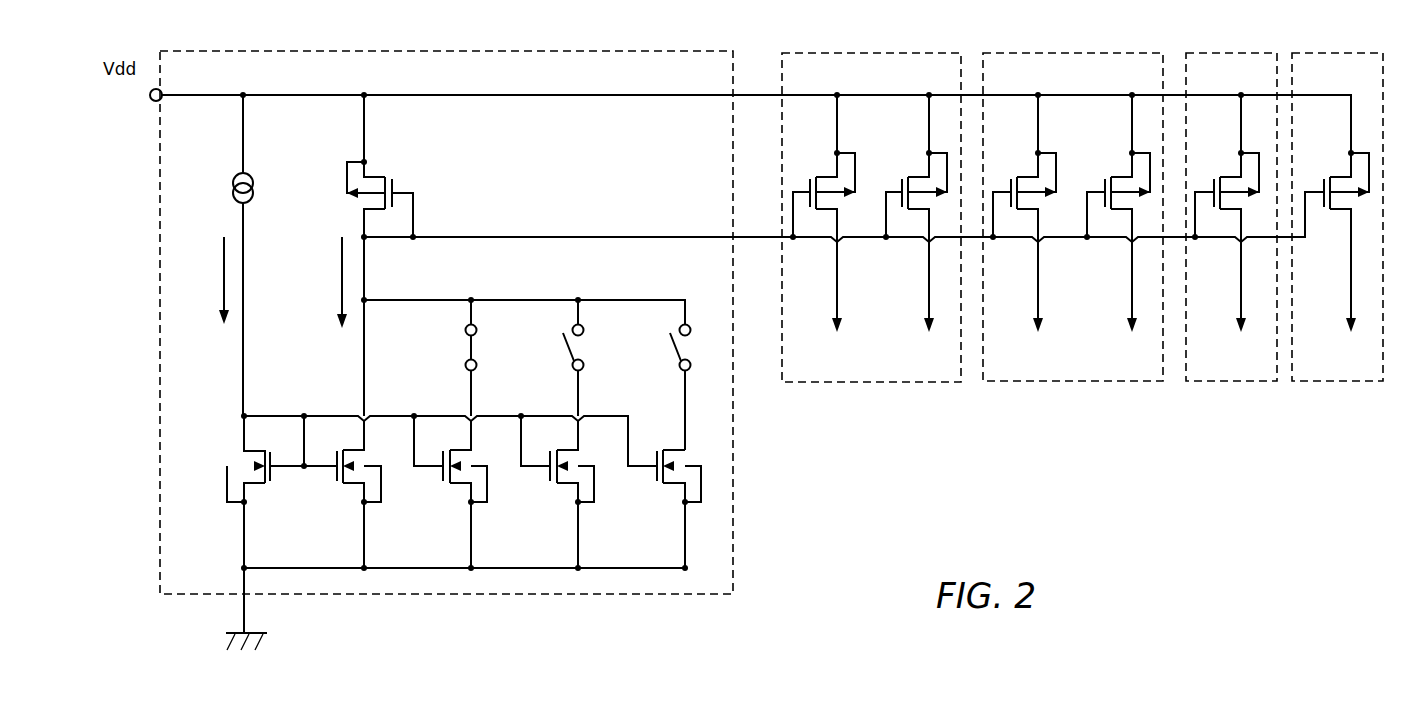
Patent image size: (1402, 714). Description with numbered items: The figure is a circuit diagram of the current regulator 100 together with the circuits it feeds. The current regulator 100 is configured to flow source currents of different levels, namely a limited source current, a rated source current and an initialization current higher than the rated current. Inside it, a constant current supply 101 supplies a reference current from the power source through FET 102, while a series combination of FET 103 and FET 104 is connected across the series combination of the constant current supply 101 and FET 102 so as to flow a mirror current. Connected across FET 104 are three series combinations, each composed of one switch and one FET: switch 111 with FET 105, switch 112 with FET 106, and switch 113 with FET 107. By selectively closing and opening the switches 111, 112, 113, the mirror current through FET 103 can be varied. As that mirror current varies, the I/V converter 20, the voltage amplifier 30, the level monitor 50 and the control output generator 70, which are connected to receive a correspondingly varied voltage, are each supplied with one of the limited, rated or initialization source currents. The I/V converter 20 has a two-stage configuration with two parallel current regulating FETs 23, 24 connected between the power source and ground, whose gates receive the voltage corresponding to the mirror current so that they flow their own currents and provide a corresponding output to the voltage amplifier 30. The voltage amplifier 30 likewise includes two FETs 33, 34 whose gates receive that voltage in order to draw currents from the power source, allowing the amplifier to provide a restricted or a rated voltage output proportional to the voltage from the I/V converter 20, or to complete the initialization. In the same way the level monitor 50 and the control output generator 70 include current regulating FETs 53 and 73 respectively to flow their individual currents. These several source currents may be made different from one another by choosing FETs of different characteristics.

The current regulator 100 is at (446, 363).
The constant current supply 101 is at (225, 195).
The FET 102 is at (230, 482).
The FET 103 is at (378, 167).
The FET 104 is at (330, 480).
The FET 105 is at (435, 487).
The FET 106 is at (546, 487).
The FET 107 is at (650, 487).
The switch 111 is at (452, 345).
The switch 112 is at (557, 345).
The switch 113 is at (664, 345).
The I/V converter 20 is at (871, 258).
The current regulating FET 23 is at (818, 167).
The current regulating FET 24 is at (910, 167).
The voltage amplifier 30 is at (1073, 258).
The FET 33 is at (1019, 167).
The FET 34 is at (1113, 167).
The level monitor 50 is at (1231, 258).
The current regulating FET 53 is at (1222, 167).
The control output generator 70 is at (1337, 258).
The current regulating FET 73 is at (1331, 167).